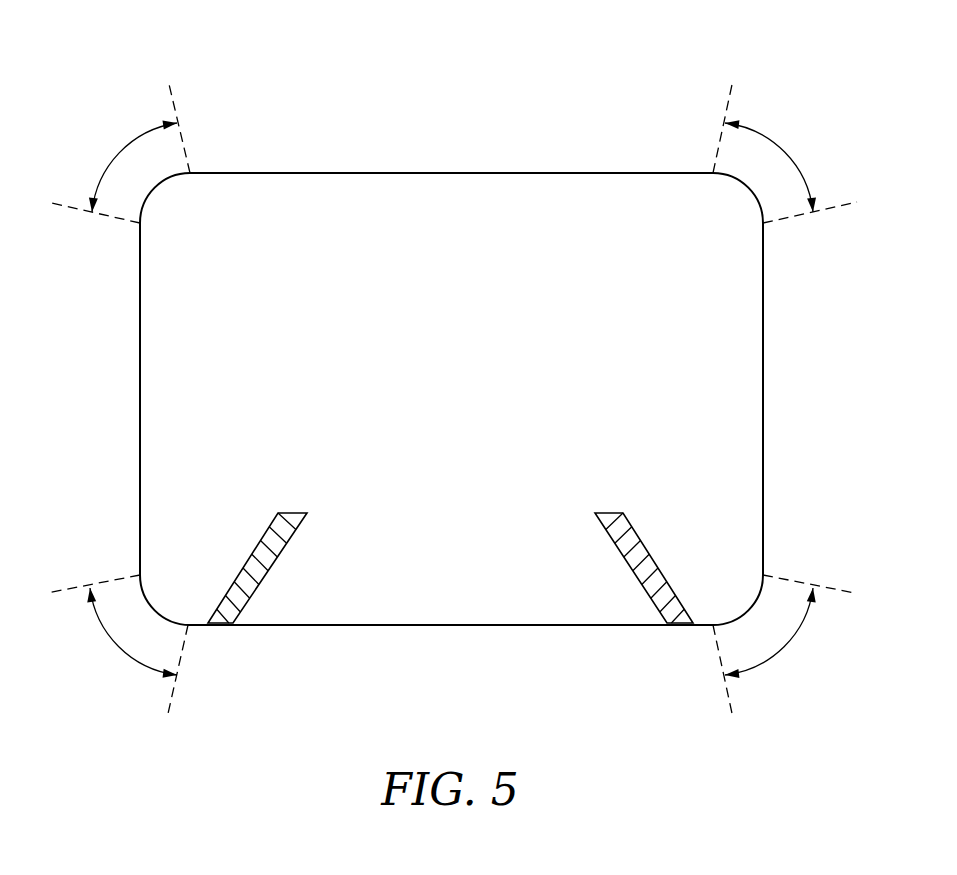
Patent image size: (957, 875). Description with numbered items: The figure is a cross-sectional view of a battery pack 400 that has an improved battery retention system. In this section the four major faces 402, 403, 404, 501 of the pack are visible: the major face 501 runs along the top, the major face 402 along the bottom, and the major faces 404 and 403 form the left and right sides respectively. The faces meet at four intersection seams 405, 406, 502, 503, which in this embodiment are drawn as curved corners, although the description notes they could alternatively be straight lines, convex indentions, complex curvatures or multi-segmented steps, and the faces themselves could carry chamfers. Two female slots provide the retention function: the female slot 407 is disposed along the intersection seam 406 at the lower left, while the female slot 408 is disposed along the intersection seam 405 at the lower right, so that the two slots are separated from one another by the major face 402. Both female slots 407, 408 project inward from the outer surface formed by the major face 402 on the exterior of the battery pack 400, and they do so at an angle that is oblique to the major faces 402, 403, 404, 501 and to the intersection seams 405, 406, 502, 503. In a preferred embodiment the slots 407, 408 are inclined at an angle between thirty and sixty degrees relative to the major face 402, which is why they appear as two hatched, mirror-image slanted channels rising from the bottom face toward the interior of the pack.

The battery pack 400 is at (463, 392).
The major face 501 is at (452, 172).
The major face 402 is at (452, 625).
The major face 403 is at (763, 398).
The major face 404 is at (140, 427).
The intersection seam 502 is at (118, 152).
The intersection seam 503 is at (780, 147).
The intersection seam 405 is at (782, 650).
The intersection seam 406 is at (118, 650).
The female slot 407 is at (293, 512).
The female slot 408 is at (598, 512).